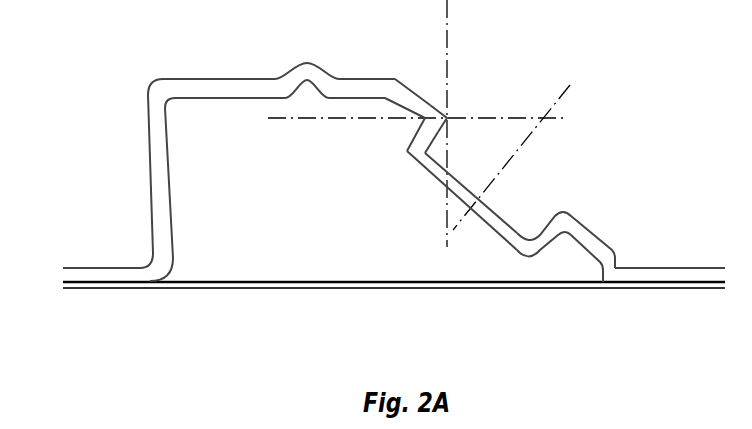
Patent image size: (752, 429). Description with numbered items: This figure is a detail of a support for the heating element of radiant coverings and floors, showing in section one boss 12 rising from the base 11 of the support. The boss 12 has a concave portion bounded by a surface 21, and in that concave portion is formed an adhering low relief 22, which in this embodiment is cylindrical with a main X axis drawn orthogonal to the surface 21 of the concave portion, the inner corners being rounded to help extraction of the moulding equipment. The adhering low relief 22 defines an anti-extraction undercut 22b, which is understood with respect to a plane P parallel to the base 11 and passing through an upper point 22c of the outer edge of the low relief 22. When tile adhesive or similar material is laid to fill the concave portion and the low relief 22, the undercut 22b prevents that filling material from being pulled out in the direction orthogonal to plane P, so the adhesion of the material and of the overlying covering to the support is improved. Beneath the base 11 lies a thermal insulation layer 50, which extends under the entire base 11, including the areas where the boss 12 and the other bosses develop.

The base 11 is at (90, 266).
The boss 12 is at (147, 83).
The surface of the concave portion 21 is at (412, 97).
The adhering low relief 22 is at (478, 206).
The anti-extraction undercut 22b is at (427, 152).
The upper point of the outer edge of the low relief 22c is at (447, 118).
The thermal insulation layer 50 is at (213, 283).
The plane P is at (280, 118).
The main axis X is at (512, 158).